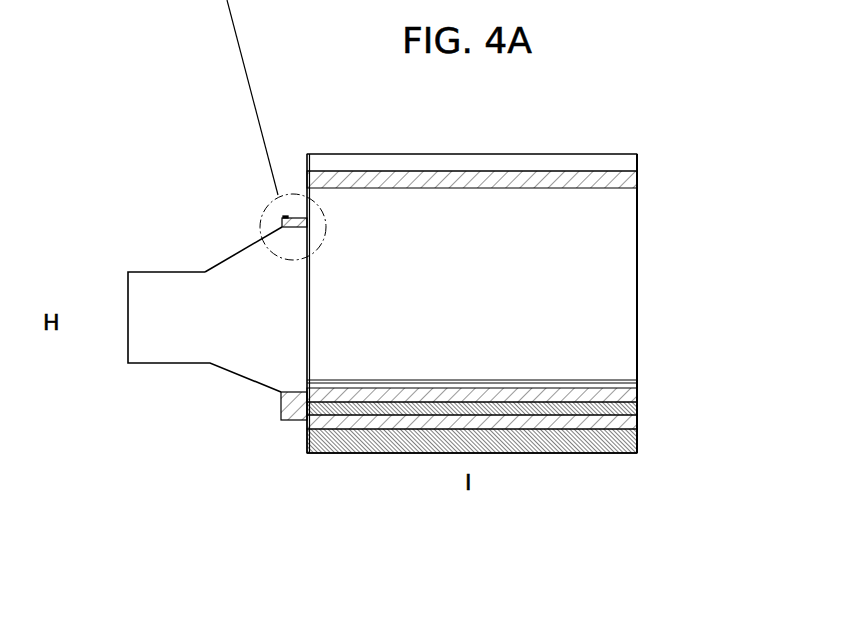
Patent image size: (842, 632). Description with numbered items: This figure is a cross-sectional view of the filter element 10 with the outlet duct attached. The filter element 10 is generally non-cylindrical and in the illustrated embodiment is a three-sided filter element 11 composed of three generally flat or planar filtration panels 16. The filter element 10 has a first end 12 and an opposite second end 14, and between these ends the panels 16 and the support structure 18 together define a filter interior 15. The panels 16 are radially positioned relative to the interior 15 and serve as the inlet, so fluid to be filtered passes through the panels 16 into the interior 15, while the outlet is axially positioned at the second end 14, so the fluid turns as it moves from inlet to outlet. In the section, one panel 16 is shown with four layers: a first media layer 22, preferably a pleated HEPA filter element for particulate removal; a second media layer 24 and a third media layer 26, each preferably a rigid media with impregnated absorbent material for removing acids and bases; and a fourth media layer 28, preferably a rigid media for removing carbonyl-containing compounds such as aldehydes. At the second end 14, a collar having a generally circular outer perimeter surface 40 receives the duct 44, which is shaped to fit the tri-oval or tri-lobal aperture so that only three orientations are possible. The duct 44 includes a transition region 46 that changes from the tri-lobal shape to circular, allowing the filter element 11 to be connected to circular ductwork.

The filter element 10 is at (585, 103).
The three-sided filter element 11 is at (383, 135).
The first end 12 is at (637, 230).
The second end 14 is at (283, 408).
The filter interior 15 is at (488, 298).
The filtration panels 16 is at (572, 455).
The support structure 18 is at (519, 155).
The first media layer 22 is at (627, 447).
The second media layer 24 is at (627, 422).
The third media layer 26 is at (627, 408).
The fourth media layer 28 is at (625, 393).
The outer perimeter surface 40 is at (300, 420).
The duct 44 is at (167, 273).
The transition region 46 is at (237, 253).